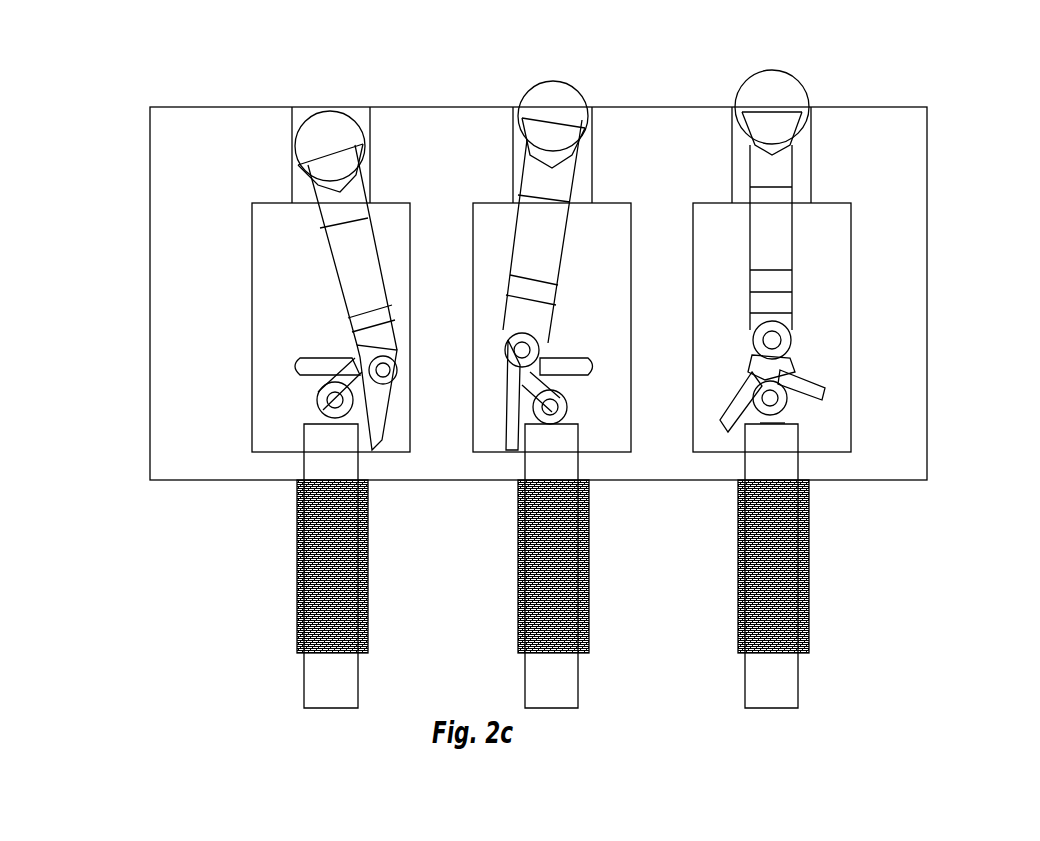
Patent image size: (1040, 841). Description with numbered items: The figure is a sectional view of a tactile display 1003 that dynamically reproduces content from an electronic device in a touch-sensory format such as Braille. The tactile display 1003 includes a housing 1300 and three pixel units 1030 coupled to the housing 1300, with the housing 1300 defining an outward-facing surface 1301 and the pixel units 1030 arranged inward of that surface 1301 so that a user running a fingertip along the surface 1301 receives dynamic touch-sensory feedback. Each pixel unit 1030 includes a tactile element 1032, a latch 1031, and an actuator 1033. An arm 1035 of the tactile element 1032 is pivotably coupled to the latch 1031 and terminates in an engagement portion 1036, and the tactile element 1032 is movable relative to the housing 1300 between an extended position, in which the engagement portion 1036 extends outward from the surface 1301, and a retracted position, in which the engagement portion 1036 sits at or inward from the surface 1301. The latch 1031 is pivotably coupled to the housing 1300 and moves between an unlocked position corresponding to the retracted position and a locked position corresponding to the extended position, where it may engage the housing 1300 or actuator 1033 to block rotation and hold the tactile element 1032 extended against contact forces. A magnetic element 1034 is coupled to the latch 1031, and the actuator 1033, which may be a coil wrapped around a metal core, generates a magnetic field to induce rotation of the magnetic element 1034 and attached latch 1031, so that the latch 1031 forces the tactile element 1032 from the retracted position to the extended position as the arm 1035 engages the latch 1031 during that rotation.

The tactile display 1003 is at (125, 92).
The housing 1300 is at (212, 182).
The outward-facing surface 1301 is at (418, 107).
The pixel unit 1030 is at (826, 233).
The latch 1031 is at (306, 357).
The tactile element 1032 is at (732, 233).
The actuator 1033 is at (298, 578).
The magnetic element 1034 is at (320, 383).
The arm 1035 is at (790, 253).
The engagement portion 1036 is at (793, 80).